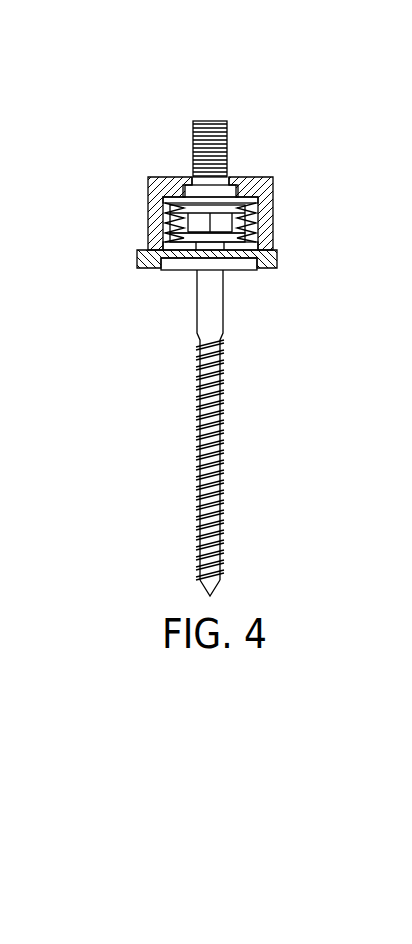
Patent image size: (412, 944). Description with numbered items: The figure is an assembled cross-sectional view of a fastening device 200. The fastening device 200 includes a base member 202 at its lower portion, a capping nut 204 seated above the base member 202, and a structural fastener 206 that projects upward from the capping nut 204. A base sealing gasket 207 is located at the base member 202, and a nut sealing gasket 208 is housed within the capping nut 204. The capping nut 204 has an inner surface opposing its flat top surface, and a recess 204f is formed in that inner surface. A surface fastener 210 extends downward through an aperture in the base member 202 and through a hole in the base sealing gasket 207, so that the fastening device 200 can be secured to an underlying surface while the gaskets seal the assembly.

The fastening device 200 is at (179, 116).
The base member 202 is at (121, 272).
The capping nut 204 is at (290, 187).
The recess 204f is at (187, 178).
The structural fastener 206 is at (222, 100).
The base sealing gasket 207 is at (240, 270).
The nut sealing gasket 208 is at (187, 208).
The surface fastener 210 is at (168, 441).